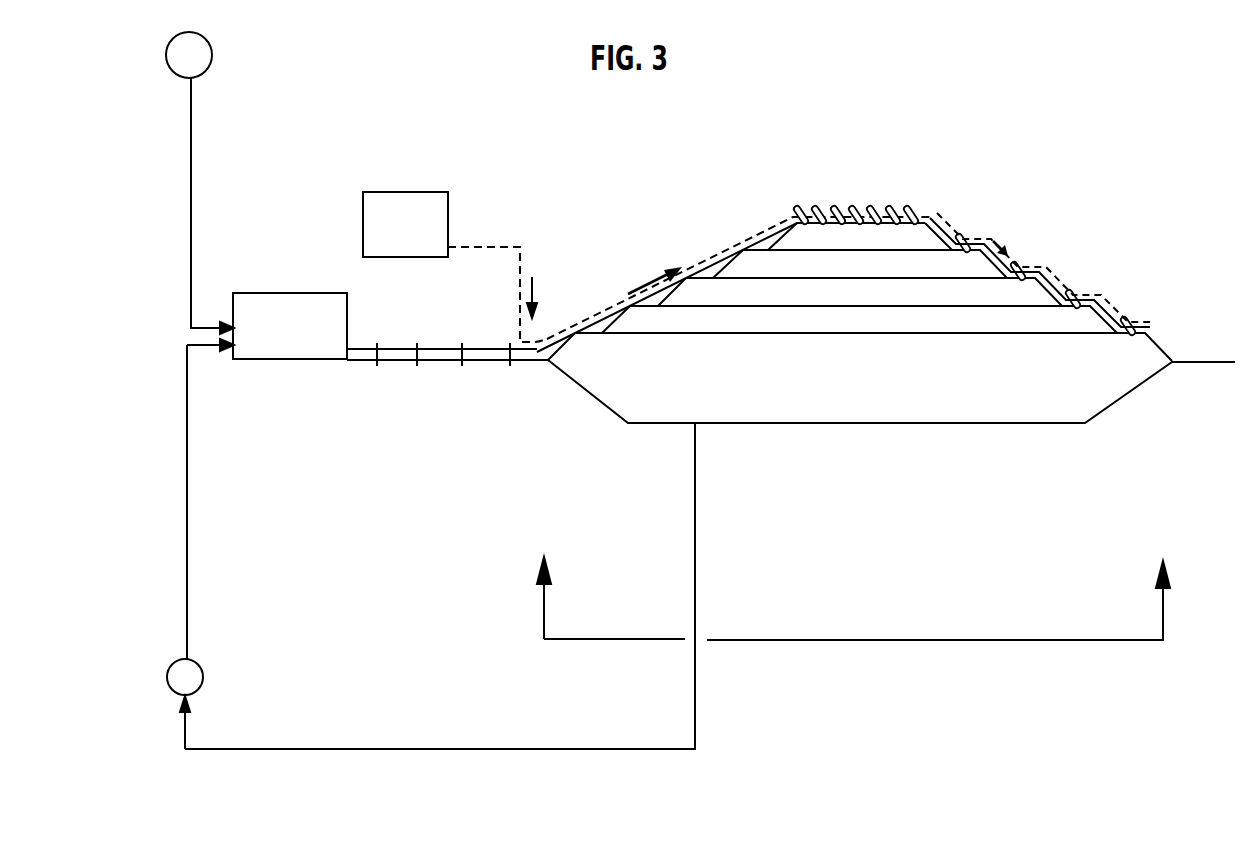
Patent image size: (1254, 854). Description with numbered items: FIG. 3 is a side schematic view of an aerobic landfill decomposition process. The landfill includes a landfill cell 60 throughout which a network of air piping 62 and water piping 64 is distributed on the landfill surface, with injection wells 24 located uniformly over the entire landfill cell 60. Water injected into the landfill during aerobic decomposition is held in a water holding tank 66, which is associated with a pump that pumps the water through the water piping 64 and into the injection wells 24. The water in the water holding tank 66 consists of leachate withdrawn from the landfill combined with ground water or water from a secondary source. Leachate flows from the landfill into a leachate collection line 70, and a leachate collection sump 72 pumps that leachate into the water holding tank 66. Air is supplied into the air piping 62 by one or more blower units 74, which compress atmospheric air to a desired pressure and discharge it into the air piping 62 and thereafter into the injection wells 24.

The injection wells 24 is at (962, 242).
The landfill cell 60 is at (1140, 362).
The air piping 62 is at (620, 300).
The water piping 64 is at (1090, 309).
The water holding tank 66 is at (269, 300).
The leachate collection line 70 is at (398, 749).
The leachate collection sump 72 is at (203, 670).
The blower units 74 is at (423, 205).